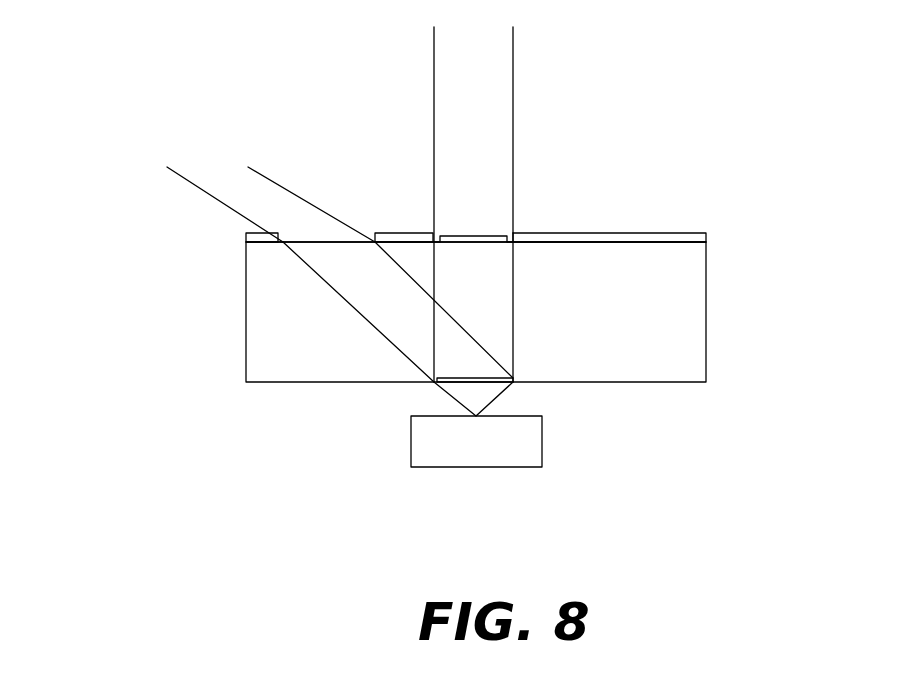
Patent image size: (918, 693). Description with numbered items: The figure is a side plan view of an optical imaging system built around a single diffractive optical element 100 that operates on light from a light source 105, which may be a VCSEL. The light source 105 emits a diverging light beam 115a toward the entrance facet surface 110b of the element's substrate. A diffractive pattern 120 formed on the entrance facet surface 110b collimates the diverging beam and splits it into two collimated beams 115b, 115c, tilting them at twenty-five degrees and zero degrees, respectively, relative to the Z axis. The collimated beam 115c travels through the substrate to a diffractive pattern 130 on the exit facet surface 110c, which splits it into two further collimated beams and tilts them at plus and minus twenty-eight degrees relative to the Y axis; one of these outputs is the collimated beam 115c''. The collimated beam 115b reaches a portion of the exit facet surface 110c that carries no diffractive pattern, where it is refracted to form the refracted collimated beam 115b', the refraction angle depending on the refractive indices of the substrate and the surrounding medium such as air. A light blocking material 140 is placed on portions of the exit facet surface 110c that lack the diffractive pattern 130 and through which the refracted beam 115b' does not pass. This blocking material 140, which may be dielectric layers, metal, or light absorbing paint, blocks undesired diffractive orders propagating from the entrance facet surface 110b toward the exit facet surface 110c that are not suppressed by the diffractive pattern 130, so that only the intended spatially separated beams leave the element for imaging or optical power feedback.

The diffractive optical element 100 is at (352, 98).
The light source 105 is at (456, 453).
The entrance facet surface 110b is at (605, 383).
The exit facet surface 110c is at (686, 241).
The diverging light beam 115a is at (465, 407).
The collimated beam 115b is at (384, 312).
The refracted collimated beam 115b' is at (243, 204).
The collimated beam 115c is at (562, 307).
The collimated beam 115c'' is at (530, 204).
The diffractive pattern 120 is at (492, 377).
The diffractive pattern 130 is at (485, 233).
The light blocking material 140 is at (256, 233).